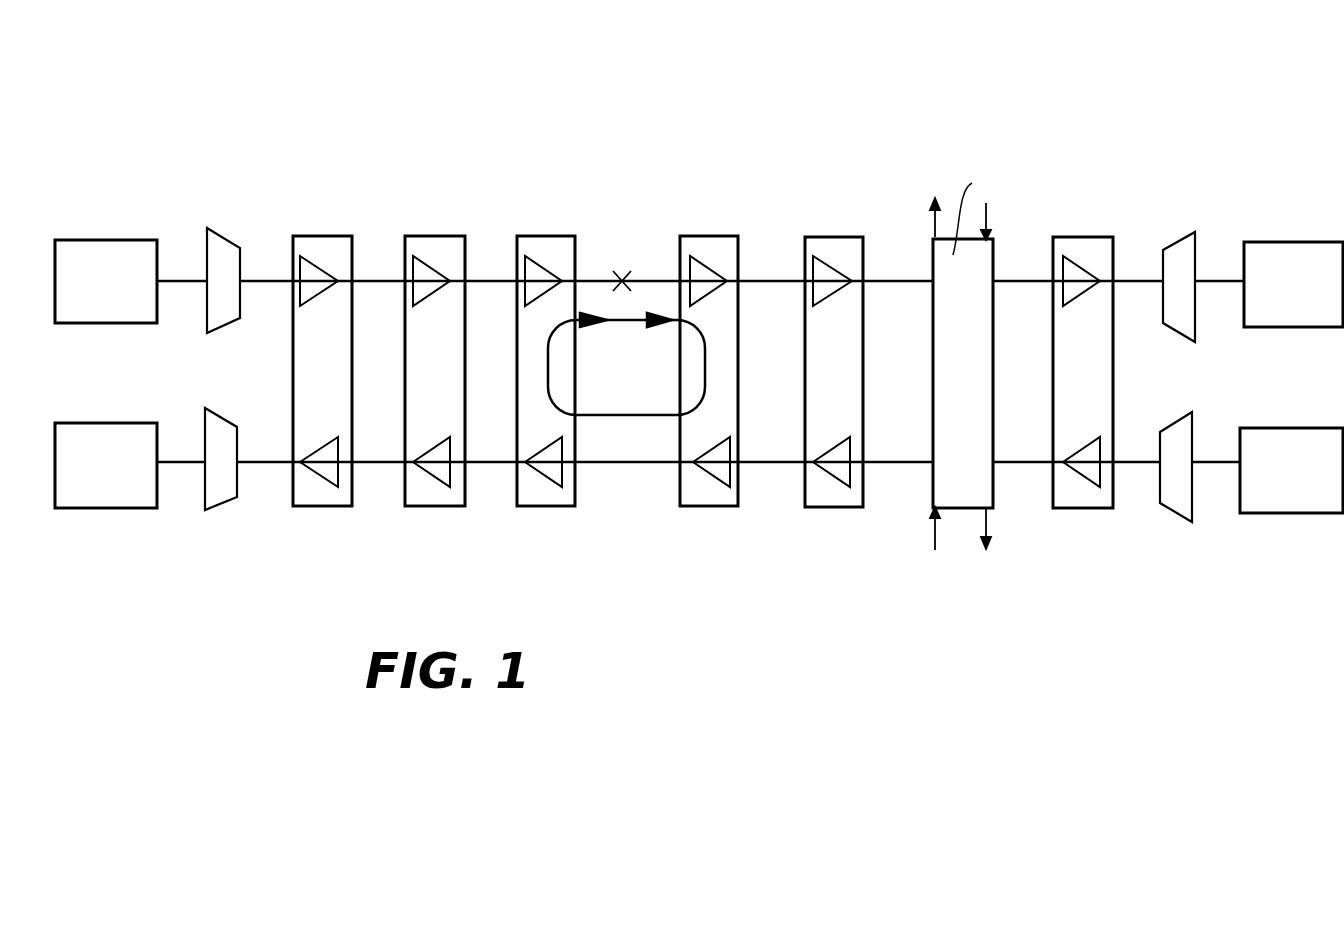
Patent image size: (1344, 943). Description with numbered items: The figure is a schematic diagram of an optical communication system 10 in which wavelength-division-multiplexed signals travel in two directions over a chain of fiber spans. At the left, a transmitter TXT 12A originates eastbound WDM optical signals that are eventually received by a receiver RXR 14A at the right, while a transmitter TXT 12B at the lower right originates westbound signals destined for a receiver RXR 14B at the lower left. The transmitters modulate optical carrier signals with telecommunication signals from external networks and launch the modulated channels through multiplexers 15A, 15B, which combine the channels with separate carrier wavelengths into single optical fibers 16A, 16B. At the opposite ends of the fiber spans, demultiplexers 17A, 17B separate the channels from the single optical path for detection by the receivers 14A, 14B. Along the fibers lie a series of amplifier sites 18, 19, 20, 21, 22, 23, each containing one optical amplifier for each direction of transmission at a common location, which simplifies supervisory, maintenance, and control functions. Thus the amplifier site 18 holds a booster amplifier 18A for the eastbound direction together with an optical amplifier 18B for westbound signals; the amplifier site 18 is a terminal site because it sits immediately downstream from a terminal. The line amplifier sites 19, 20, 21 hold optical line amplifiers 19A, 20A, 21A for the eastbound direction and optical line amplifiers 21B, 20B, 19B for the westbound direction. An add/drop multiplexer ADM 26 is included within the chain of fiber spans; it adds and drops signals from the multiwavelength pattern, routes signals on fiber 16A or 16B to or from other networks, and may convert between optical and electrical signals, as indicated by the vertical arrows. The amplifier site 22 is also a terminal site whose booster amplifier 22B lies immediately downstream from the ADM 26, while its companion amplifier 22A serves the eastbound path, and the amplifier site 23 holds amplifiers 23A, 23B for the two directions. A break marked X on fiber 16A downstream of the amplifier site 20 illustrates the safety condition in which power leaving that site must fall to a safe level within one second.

The optical communication system 10 is at (786, 639).
The transmitter TXT 12A is at (107, 240).
The transmitter TXT 12B is at (1272, 513).
The receiver RXR 14A is at (1263, 242).
The receiver RXR 14B is at (90, 508).
The multiplexer 15A is at (230, 250).
The multiplexer 15B is at (1250, 378).
The optical fiber 16A is at (255, 281).
The optical fiber 16B is at (912, 462).
The demultiplexer 17A is at (1183, 232).
The demultiplexer 17B is at (218, 512).
The terminal amplifier site 18 is at (302, 370).
The booster amplifier 18A is at (314, 300).
The optical amplifier 18B is at (320, 487).
The line amplifier site 19 is at (438, 374).
The optical line amplifier 19A is at (428, 305).
The optical line amplifier 19B is at (430, 490).
The line amplifier site 20 is at (540, 370).
The optical line amplifier 20A is at (538, 252).
The optical line amplifier 20B is at (545, 488).
The line amplifier site 21 is at (737, 371).
The optical line amplifier 21A is at (705, 292).
The optical line amplifier 21B is at (700, 487).
The terminal amplifier site 22 is at (848, 373).
The optical amplifier 22A is at (842, 292).
The booster amplifier 22B is at (838, 488).
The amplifier site 23 is at (1073, 372).
The optical amplifier 23A is at (1060, 292).
The optical amplifier 23B is at (1080, 490).
The add/drop multiplexer (ADM) 26 is at (995, 250).